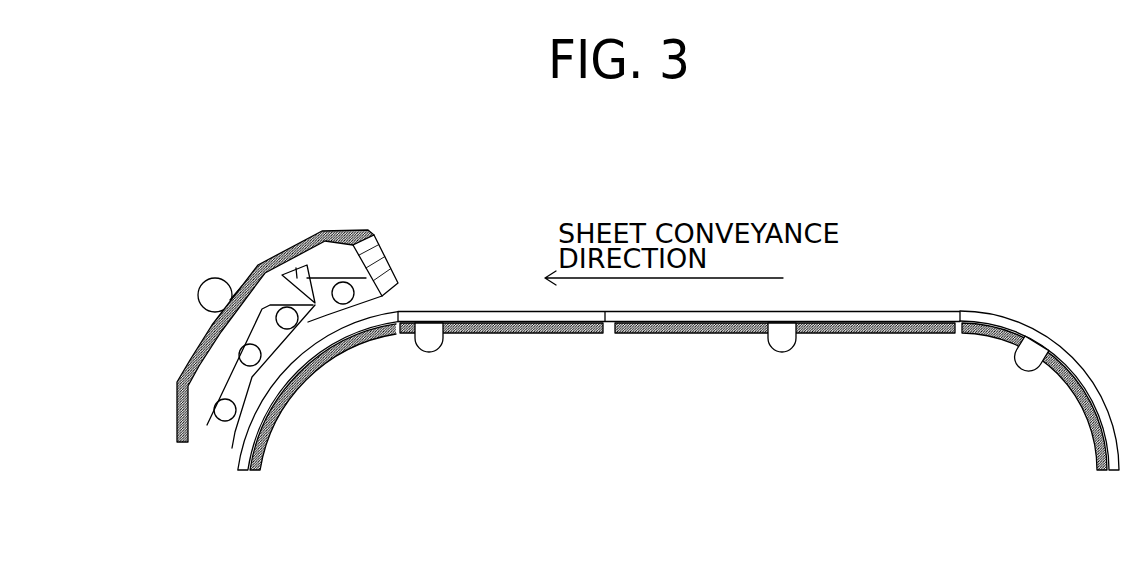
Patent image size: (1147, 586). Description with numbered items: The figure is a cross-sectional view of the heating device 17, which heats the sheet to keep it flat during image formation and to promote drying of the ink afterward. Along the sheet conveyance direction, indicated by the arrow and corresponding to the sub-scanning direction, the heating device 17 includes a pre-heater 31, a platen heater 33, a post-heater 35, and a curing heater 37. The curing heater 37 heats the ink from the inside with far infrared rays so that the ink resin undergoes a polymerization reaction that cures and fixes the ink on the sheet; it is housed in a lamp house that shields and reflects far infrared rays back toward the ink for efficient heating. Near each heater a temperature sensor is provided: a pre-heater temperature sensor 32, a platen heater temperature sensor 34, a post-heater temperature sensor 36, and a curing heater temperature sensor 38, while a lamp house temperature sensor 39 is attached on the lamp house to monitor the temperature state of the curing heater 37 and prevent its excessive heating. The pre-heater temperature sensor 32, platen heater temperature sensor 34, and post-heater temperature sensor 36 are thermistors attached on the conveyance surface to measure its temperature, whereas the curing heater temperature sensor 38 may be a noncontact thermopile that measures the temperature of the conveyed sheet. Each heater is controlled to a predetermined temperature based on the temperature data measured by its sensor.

The heating device 17 is at (152, 156).
The pre-heater 31 is at (1082, 403).
The pre-heater temperature sensor 32 is at (1022, 362).
The platen heater 33 is at (710, 328).
The platen heater temperature sensor 34 is at (783, 345).
The post-heater 35 is at (517, 329).
The post-heater temperature sensor 36 is at (432, 343).
The curing heater 37 is at (238, 292).
The curing heater temperature sensor 38 is at (288, 250).
The lamp house temperature sensor 39 is at (214, 294).